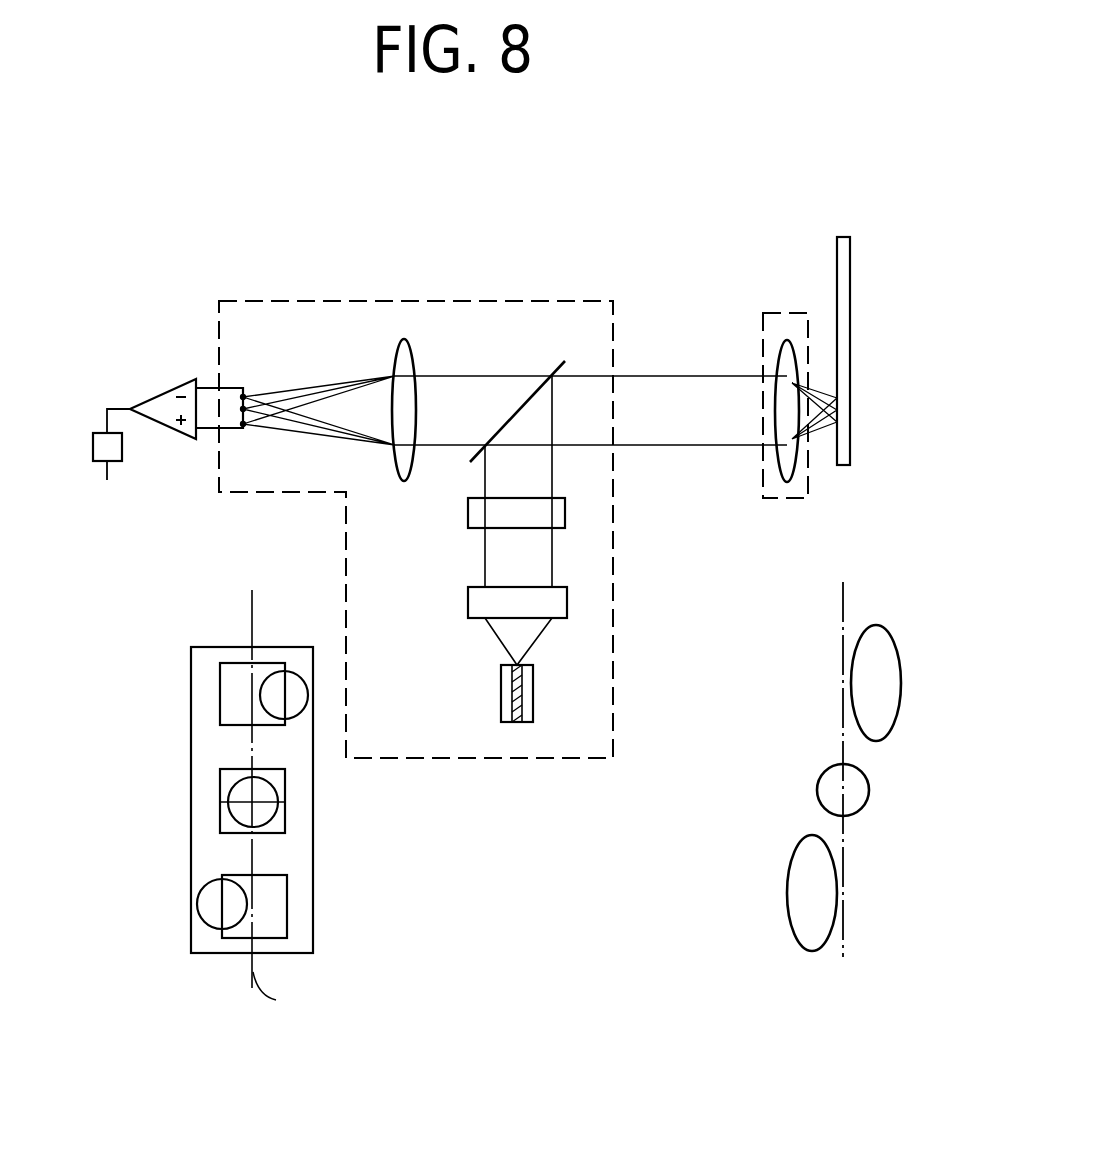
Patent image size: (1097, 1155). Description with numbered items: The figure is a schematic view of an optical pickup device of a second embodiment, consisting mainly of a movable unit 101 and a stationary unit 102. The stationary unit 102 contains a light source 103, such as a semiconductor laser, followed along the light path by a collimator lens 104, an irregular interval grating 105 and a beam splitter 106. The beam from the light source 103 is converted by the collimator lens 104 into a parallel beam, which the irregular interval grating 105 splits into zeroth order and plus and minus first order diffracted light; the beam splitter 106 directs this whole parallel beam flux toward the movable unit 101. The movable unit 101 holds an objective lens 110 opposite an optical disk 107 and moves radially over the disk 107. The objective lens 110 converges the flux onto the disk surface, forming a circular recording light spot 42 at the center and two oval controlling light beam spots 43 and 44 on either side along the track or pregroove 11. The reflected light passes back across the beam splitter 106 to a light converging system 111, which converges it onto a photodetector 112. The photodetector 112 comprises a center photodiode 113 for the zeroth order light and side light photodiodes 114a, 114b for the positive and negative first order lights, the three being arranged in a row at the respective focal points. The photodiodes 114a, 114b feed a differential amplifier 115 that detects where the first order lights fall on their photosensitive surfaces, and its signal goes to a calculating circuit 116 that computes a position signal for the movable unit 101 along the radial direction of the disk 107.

The track or pregroove 11 is at (845, 600).
The circular recording light spot 42 is at (828, 770).
The oval controlling light beam spot 43 is at (885, 737).
The oval controlling light beam spot 44 is at (790, 870).
The movable unit 101 is at (763, 338).
The stationary unit 102 is at (412, 300).
The light source 103 is at (501, 690).
The collimator lens 104 is at (468, 600).
The irregular interval grating 105 is at (565, 517).
The beam splitter 106 is at (565, 360).
The optical disk 107 is at (843, 237).
The objective lens 110 is at (790, 340).
The light converging system 111 is at (400, 482).
The photodetector 112 is at (280, 611).
The center photodiode 113 is at (220, 777).
The side light photodiode 114a is at (246, 386).
The side light photodiode 114b is at (207, 680).
The differential amplifier 115 is at (168, 388).
The calculating circuit 116 is at (123, 443).